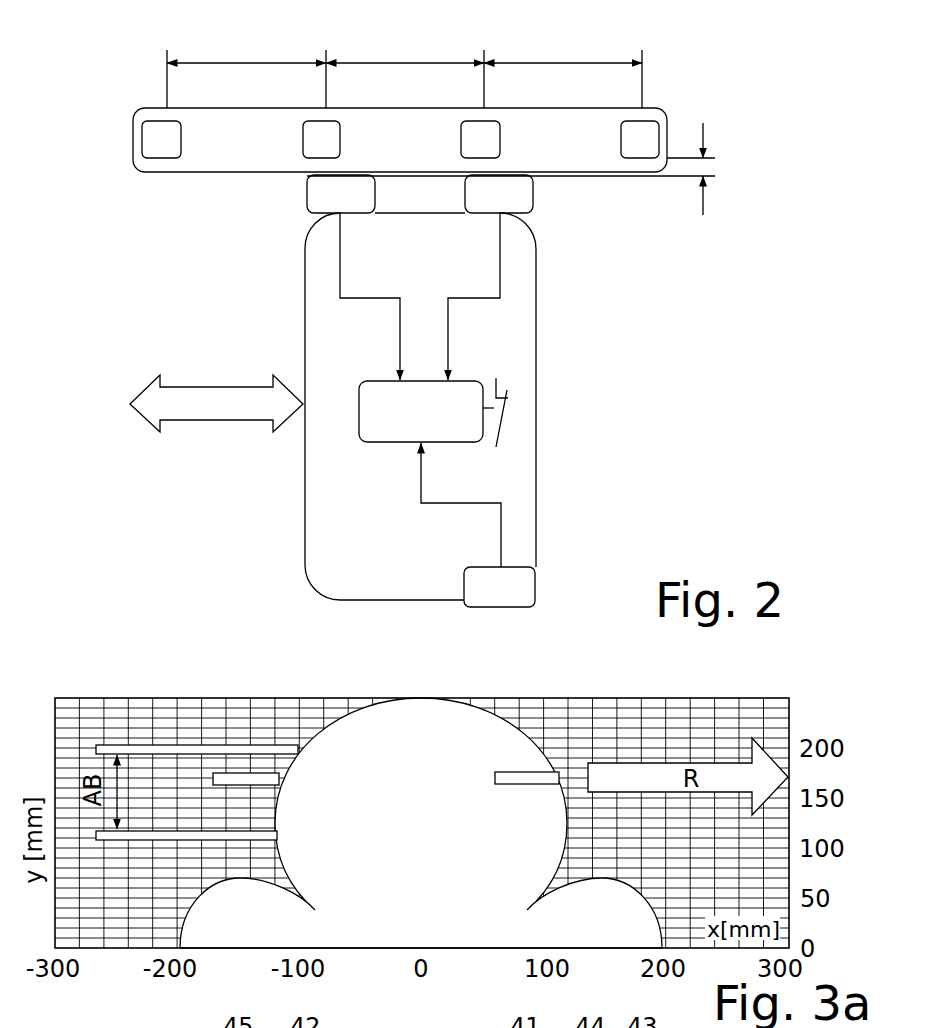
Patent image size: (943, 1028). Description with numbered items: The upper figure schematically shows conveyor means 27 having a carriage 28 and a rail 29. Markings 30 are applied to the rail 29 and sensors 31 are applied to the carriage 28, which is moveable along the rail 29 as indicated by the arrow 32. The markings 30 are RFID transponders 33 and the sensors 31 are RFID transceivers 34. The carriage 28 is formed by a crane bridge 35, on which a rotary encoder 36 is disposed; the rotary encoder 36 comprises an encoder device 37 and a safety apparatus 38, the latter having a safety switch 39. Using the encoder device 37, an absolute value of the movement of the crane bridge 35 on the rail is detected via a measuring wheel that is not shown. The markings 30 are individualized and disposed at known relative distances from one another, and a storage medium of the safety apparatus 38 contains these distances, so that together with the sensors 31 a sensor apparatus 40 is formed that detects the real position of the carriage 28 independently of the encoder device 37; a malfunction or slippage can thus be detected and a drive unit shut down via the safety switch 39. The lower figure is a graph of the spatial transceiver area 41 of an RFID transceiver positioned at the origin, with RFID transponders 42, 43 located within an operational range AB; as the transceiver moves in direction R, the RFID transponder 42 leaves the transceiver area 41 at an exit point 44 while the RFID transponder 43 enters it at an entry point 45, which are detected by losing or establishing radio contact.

In FIG. 2, the conveyor means 27 is at (682, 59).
In FIG. 2, the carriage 28 is at (514, 517).
In FIG. 2, the rail 29 is at (213, 148).
In FIG. 2, the markings 30 is at (141, 135).
In FIG. 2, the sensors 31 is at (306, 211).
In FIG. 2, the arrow 32 is at (241, 411).
In FIG. 2, the RFID transponders 33 is at (163, 123).
In FIG. 2, the RFID transceivers 34 is at (306, 188).
In FIG. 2, the crane bridge 35 is at (524, 470).
In FIG. 2, the rotary encoder 36 is at (298, 535).
In FIG. 2, the encoder device 37 is at (522, 586).
In FIG. 2, the safety apparatus 38 is at (432, 396).
In FIG. 2, the safety switch 39 is at (514, 413).
In FIG. 2, the sensor apparatus 40 is at (729, 169).
In FIG. 3A, the transceiver area 41 is at (513, 737).
In FIG. 3A, the RFID transponder 42 is at (243, 781).
In FIG. 3A, the RFID transponder 43 is at (533, 774).
In FIG. 3A, the exit point 44 is at (283, 765).
In FIG. 3A, the entry point 45 is at (564, 774).